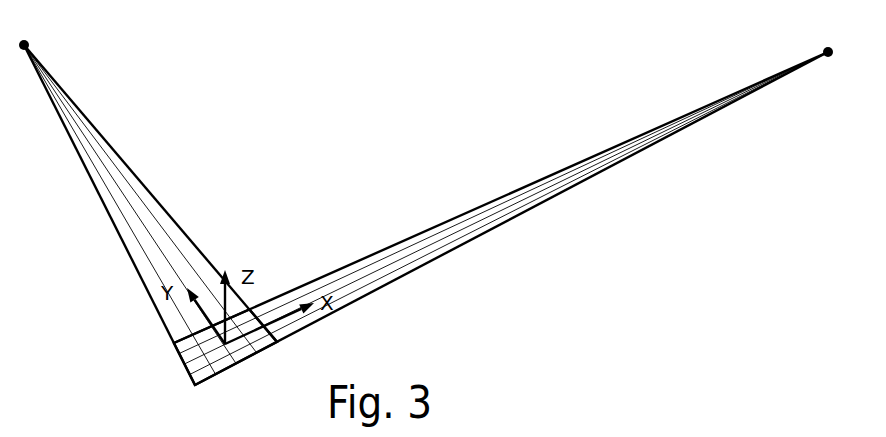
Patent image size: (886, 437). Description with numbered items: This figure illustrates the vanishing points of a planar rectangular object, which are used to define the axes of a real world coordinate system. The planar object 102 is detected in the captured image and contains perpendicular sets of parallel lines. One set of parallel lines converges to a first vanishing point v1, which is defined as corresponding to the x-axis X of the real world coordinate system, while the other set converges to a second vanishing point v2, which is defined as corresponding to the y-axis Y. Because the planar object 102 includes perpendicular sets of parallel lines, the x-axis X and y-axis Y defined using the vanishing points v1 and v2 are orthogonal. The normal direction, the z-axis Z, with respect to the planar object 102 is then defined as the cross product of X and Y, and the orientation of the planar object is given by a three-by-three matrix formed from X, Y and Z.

The first vanishing point v1 is at (822, 50).
The second vanishing point v2 is at (30, 42).
The planar object 102 is at (190, 383).